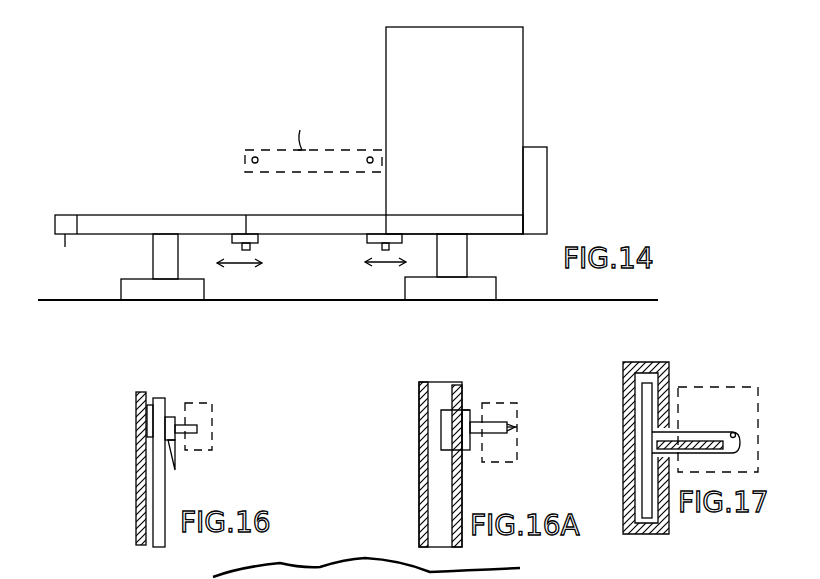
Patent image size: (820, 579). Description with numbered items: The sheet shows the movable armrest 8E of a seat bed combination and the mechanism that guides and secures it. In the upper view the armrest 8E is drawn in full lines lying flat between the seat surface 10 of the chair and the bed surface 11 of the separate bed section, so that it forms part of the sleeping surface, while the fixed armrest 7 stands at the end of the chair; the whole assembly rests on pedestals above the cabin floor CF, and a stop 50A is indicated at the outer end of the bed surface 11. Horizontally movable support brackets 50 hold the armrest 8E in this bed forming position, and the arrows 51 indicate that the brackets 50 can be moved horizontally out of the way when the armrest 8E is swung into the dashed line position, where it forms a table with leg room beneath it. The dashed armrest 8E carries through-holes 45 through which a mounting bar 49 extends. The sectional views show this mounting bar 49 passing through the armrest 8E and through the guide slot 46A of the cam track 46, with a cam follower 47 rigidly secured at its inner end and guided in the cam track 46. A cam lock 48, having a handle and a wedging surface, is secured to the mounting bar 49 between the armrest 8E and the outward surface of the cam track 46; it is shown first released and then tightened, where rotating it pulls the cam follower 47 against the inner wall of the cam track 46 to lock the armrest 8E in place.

In FIG. 14, the fixed armrest 7 is at (547, 165).
In FIG. 14, the seat surface 10 is at (467, 215).
In FIG. 14, the bed surface 11 is at (145, 215).
In FIG. 14, the through-holes 45 is at (255, 157).
In FIG. 16, the cam track 46 is at (138, 477).
In FIG. 16A, the cam track 46 is at (419, 437).
In FIG. 17, the cam track 46 is at (641, 534).
In FIG. 17, the guide slot 46A is at (667, 430).
In FIG. 16, the cam follower 47 is at (160, 396).
In FIG. 16A, the cam follower 47 is at (450, 396).
In FIG. 17, the cam follower 47 is at (642, 400).
In FIG. 16, the cam lock 48 is at (177, 414).
In FIG. 16A, the cam lock 48 is at (470, 450).
In FIG. 16A, the mounting bar 49 is at (517, 428).
In FIG. 17, the mounting bar 49 is at (736, 435).
In FIG. 14, the support brackets 50 is at (397, 232).
In FIG. 14, the stop 50A is at (78, 257).
In FIG. 14, the arrows 51 is at (240, 265).
In FIG. 14, the movable armrest 8E is at (316, 192).
In FIG. 16, the movable armrest 8E is at (212, 420).
In FIG. 16A, the movable armrest 8E is at (482, 403).
In FIG. 17, the movable armrest 8E is at (740, 402).
In FIG. 14, the cabin floor CF is at (583, 300).